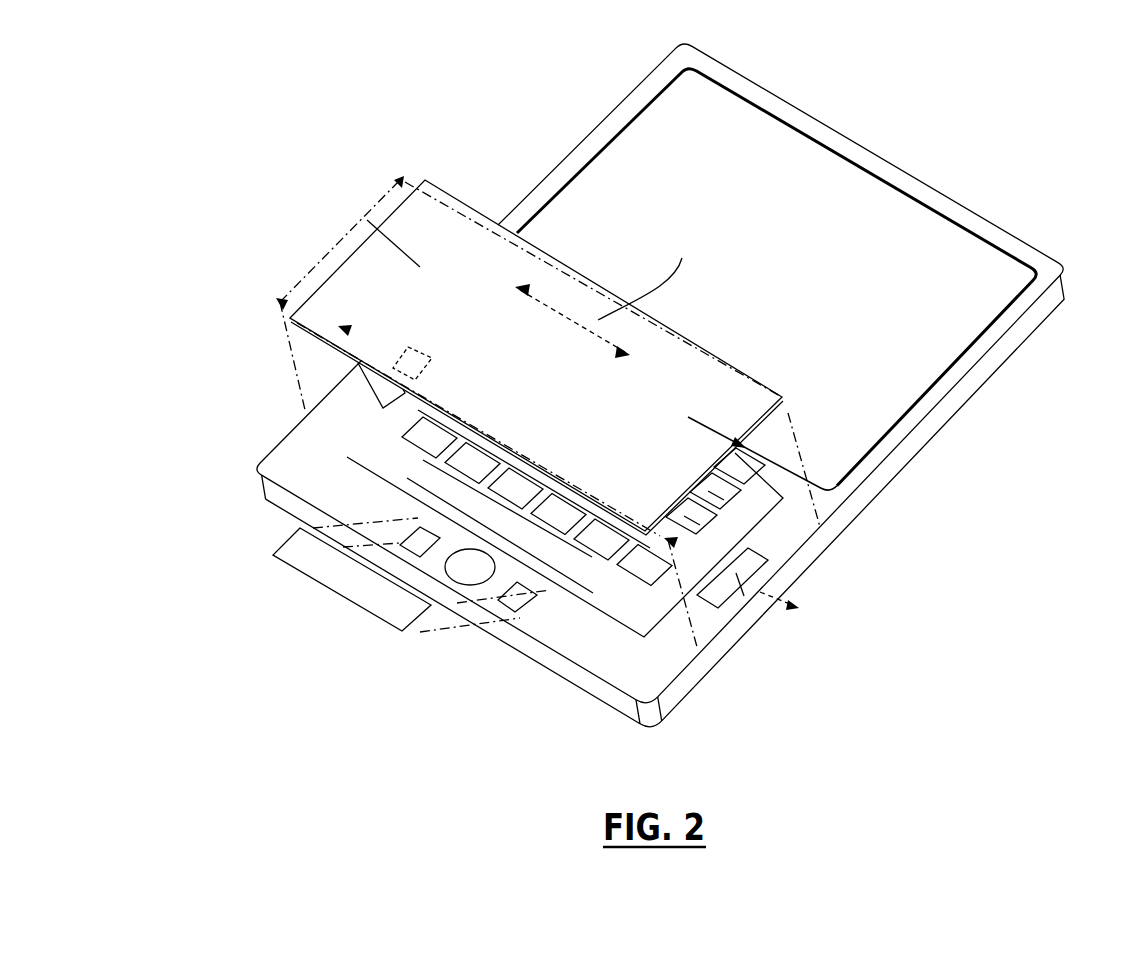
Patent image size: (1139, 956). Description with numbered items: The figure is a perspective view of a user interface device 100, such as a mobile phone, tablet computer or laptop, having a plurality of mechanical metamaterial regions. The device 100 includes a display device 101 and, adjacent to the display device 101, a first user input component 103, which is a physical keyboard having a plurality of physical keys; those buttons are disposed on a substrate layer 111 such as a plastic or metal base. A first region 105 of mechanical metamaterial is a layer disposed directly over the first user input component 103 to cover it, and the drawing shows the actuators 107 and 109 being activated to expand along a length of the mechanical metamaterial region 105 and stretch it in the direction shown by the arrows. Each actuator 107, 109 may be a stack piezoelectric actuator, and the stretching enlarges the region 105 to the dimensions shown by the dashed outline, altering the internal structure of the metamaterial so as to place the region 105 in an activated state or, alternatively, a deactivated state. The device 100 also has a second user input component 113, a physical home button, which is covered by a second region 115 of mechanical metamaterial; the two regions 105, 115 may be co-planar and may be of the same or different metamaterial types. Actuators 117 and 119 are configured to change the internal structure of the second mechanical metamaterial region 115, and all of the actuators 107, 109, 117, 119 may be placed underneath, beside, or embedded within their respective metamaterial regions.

The user interface device 100 is at (968, 165).
The display device 101 is at (960, 358).
The first user input component 103 is at (760, 525).
The first region of mechanical metamaterial 105 is at (316, 258).
The actuator 107 is at (757, 603).
The actuator 109 is at (350, 372).
The substrate layer 111 is at (595, 652).
The second user input component 113 is at (467, 582).
The second region of mechanical metamaterial 115 is at (318, 585).
The actuator 117 is at (507, 612).
The actuator 119 is at (403, 548).